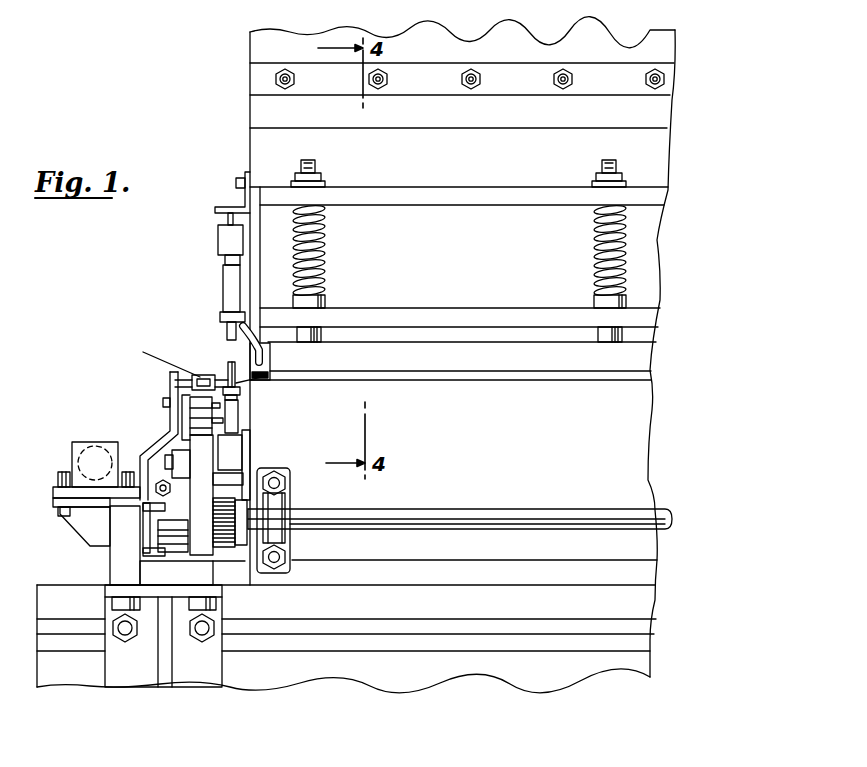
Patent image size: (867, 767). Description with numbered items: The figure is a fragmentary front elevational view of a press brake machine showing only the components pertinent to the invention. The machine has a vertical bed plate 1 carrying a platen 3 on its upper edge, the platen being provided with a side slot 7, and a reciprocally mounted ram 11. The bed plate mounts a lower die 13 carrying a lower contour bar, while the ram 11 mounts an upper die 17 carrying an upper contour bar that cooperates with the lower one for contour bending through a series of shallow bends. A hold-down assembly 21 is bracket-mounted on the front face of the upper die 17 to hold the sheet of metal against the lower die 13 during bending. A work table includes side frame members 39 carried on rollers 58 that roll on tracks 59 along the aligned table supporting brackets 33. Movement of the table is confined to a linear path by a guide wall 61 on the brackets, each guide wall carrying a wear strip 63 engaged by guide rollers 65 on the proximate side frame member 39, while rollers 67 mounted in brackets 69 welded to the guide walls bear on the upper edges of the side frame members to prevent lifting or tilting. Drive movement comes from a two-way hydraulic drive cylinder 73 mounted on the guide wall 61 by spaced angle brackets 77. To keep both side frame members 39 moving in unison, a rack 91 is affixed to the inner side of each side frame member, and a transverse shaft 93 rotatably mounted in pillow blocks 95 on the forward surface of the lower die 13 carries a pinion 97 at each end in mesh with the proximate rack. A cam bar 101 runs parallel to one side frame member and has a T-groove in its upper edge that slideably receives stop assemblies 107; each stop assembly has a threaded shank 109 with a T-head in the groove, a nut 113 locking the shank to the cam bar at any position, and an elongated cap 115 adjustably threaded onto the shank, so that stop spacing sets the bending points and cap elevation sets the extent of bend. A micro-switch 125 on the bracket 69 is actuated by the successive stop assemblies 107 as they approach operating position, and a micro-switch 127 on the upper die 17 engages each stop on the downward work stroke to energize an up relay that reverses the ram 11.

The vertical bed plate 1 is at (333, 682).
The platen 3 is at (400, 652).
The side slot 7 is at (518, 629).
The ram 11 is at (612, 45).
The lower die 13 is at (548, 400).
The upper die 17 is at (655, 143).
The hold-down assembly 21 is at (410, 311).
The table supporting bracket 33 is at (150, 645).
The side frame member 39 is at (205, 475).
The roller 58 is at (184, 552).
The track 59 is at (214, 555).
The guide wall 61 is at (118, 552).
The wear strip 63 is at (150, 558).
The guide roller 65 is at (150, 531).
The roller 67 is at (214, 424).
The bracket 69 is at (162, 452).
The two-way hydraulic drive cylinder 73 is at (72, 456).
The angle bracket 77 is at (88, 522).
The rack 91 is at (265, 478).
The shaft 93 is at (454, 516).
The pillow block 95 is at (279, 501).
The pinion 97 is at (234, 536).
The cam bar 101 is at (238, 422).
The stop assembly 107 is at (226, 364).
The threaded shank 109 is at (270, 373).
The nut 113 is at (156, 359).
The elongated cap 115 is at (236, 360).
The micro-switch 125 is at (198, 374).
The micro-switch 127 is at (233, 306).